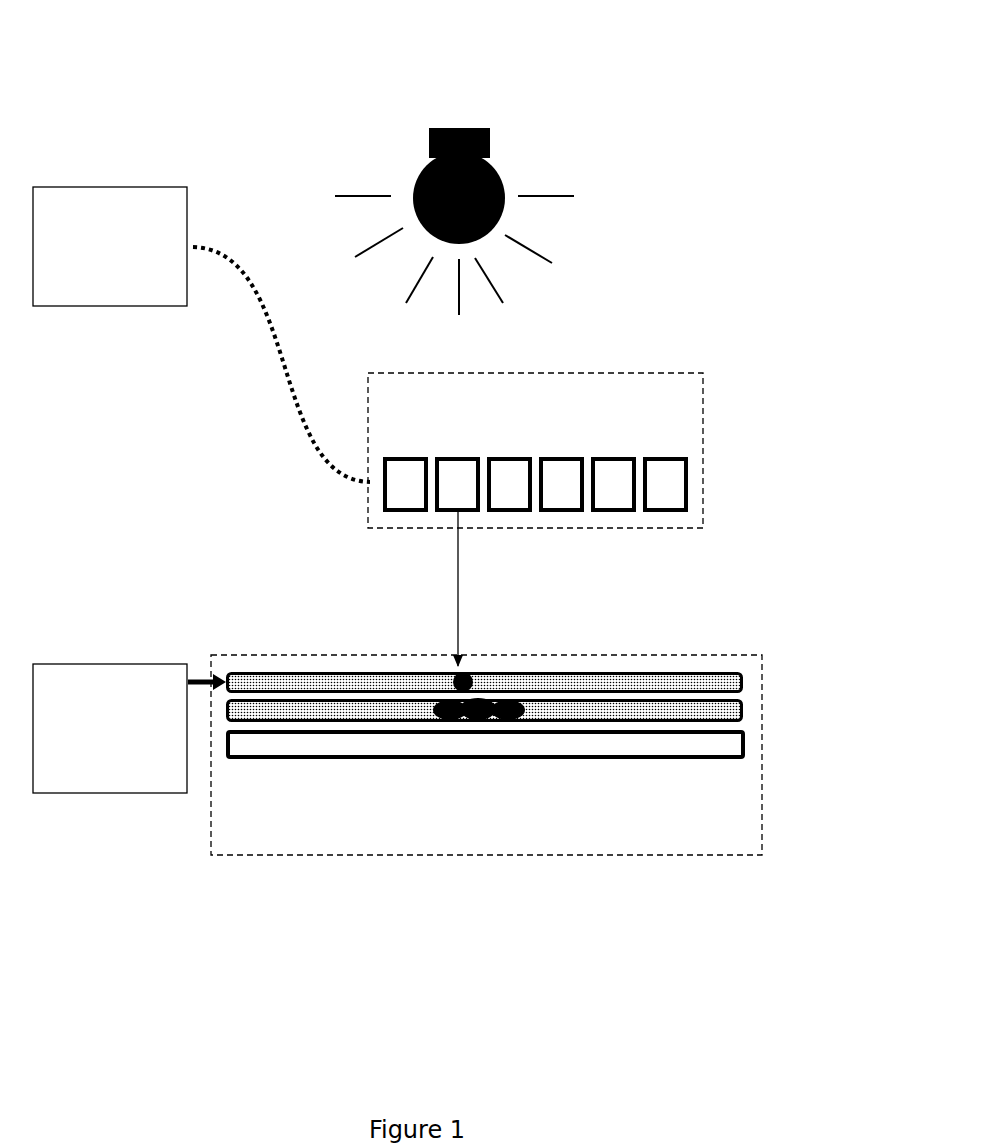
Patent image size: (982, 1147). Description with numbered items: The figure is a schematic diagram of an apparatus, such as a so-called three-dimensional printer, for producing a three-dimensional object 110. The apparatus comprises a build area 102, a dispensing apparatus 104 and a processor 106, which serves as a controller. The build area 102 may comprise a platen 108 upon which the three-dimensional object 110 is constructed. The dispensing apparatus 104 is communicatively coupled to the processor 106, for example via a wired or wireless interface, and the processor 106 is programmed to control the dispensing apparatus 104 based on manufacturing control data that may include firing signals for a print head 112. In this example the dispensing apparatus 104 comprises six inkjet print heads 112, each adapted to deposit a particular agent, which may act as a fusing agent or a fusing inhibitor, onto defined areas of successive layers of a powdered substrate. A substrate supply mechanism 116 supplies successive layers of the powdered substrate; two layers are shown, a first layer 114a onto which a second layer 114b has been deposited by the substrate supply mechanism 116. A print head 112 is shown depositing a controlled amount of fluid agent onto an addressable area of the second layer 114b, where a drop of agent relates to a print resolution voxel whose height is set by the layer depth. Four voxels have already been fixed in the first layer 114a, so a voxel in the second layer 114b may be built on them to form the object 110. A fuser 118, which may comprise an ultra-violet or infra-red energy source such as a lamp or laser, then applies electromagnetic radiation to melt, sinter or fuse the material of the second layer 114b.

The build area 102 is at (534, 719).
The dispensing apparatus 104 is at (535, 488).
The processor 106 is at (201, 334).
The platen 108 is at (315, 760).
The three-dimensional object 110 is at (443, 679).
The inkjet print head 112 is at (478, 516).
The first layer 114a is at (749, 711).
The second layer 114b is at (748, 678).
The substrate supply mechanism 116 is at (129, 728).
The fuser 118 is at (400, 159).